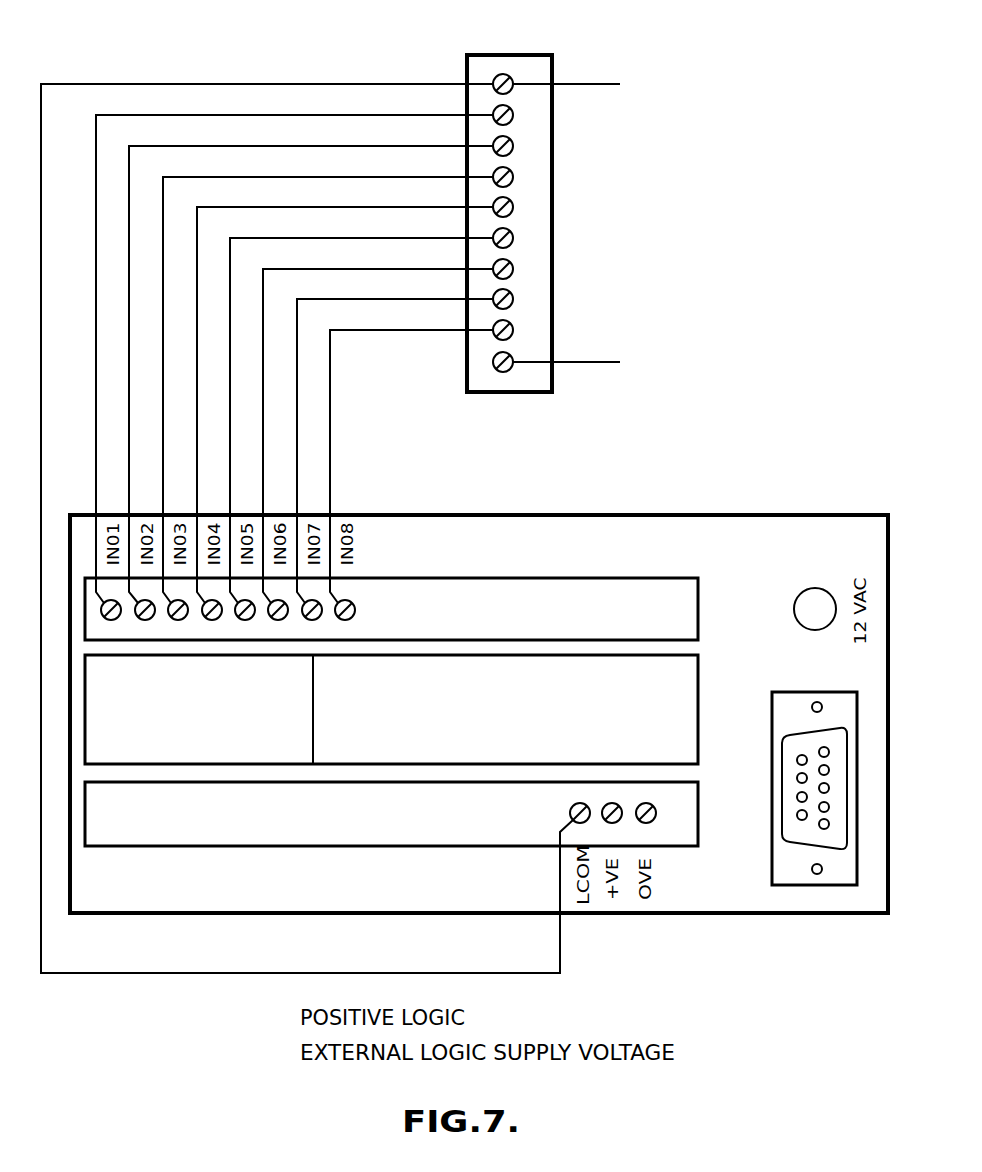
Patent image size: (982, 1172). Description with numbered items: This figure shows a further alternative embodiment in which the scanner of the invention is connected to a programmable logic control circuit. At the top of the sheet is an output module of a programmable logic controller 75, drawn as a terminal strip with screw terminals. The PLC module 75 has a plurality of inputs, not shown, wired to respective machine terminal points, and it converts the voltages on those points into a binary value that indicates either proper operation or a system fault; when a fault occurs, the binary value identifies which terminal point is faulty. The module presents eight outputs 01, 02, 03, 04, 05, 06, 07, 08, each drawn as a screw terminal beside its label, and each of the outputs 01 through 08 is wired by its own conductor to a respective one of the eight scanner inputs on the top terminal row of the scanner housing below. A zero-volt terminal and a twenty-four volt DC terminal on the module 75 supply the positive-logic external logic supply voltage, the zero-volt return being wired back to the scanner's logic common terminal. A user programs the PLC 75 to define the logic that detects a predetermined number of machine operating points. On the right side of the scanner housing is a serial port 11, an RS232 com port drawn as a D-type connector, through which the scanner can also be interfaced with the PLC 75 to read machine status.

The programmable logic controller output module 75 is at (518, 393).
The serial port 11 is at (839, 875).
The output 01 is at (317, 354).
The output 02 is at (333, 369).
The output 03 is at (350, 385).
The output 04 is at (367, 400).
The output 05 is at (384, 415).
The output 06 is at (400, 431).
The output 07 is at (417, 446).
The output 08 is at (434, 461).